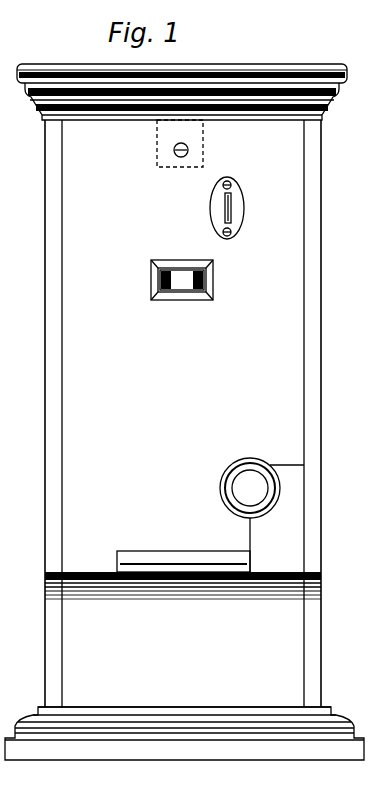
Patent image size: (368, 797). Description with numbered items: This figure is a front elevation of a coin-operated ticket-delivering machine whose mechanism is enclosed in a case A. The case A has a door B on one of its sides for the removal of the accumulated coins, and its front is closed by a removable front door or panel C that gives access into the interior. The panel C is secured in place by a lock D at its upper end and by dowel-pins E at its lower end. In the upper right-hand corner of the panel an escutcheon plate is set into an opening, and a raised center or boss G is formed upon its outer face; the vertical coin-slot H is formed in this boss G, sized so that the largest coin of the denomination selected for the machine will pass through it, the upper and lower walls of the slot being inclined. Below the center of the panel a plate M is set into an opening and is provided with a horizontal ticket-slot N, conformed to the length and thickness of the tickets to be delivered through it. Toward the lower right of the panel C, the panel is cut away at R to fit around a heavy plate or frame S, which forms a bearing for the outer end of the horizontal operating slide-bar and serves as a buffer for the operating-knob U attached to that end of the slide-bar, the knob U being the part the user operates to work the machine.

The case A is at (316, 230).
The door B is at (182, 280).
The removable front door or panel C is at (183, 413).
The lock D is at (180, 143).
The dowel-pins E is at (243, 208).
The raised center or boss G is at (223, 207).
The vertical coin-slot H is at (227, 216).
The operating-knob U is at (250, 488).
The cut-away portion of panel R is at (249, 532).
The heavy plate or frame S is at (286, 503).
The plate M is at (165, 551).
The horizontal ticket-slot N is at (194, 563).